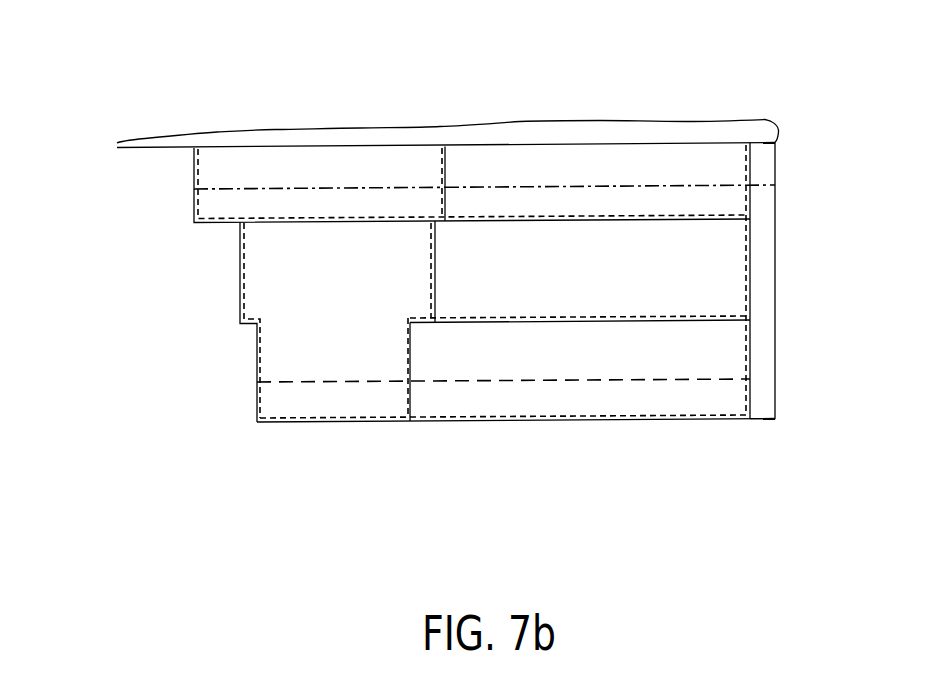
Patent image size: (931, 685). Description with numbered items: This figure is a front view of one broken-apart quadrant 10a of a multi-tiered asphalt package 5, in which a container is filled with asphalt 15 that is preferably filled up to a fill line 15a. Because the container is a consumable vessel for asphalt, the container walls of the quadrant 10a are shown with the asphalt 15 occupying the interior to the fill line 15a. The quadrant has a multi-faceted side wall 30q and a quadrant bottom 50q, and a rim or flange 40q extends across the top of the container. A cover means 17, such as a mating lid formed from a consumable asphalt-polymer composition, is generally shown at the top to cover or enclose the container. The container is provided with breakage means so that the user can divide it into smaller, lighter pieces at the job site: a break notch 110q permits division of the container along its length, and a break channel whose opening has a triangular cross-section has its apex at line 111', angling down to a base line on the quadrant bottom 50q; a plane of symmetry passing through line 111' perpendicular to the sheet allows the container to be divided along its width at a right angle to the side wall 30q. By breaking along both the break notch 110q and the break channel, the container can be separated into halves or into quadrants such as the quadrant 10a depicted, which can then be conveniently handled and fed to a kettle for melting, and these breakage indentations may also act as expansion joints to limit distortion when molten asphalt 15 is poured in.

The asphalt package 5 is at (710, 90).
The card body 10a is at (362, 452).
The asphalt 15 is at (355, 202).
The fill line 15a is at (537, 185).
The cover means 17 is at (767, 119).
The side wall 30q is at (525, 355).
The rim or flange 40q is at (117, 143).
The quadrant bottom 50q is at (590, 422).
The break notch 110q is at (759, 400).
The apex line of break channel 111' is at (547, 338).